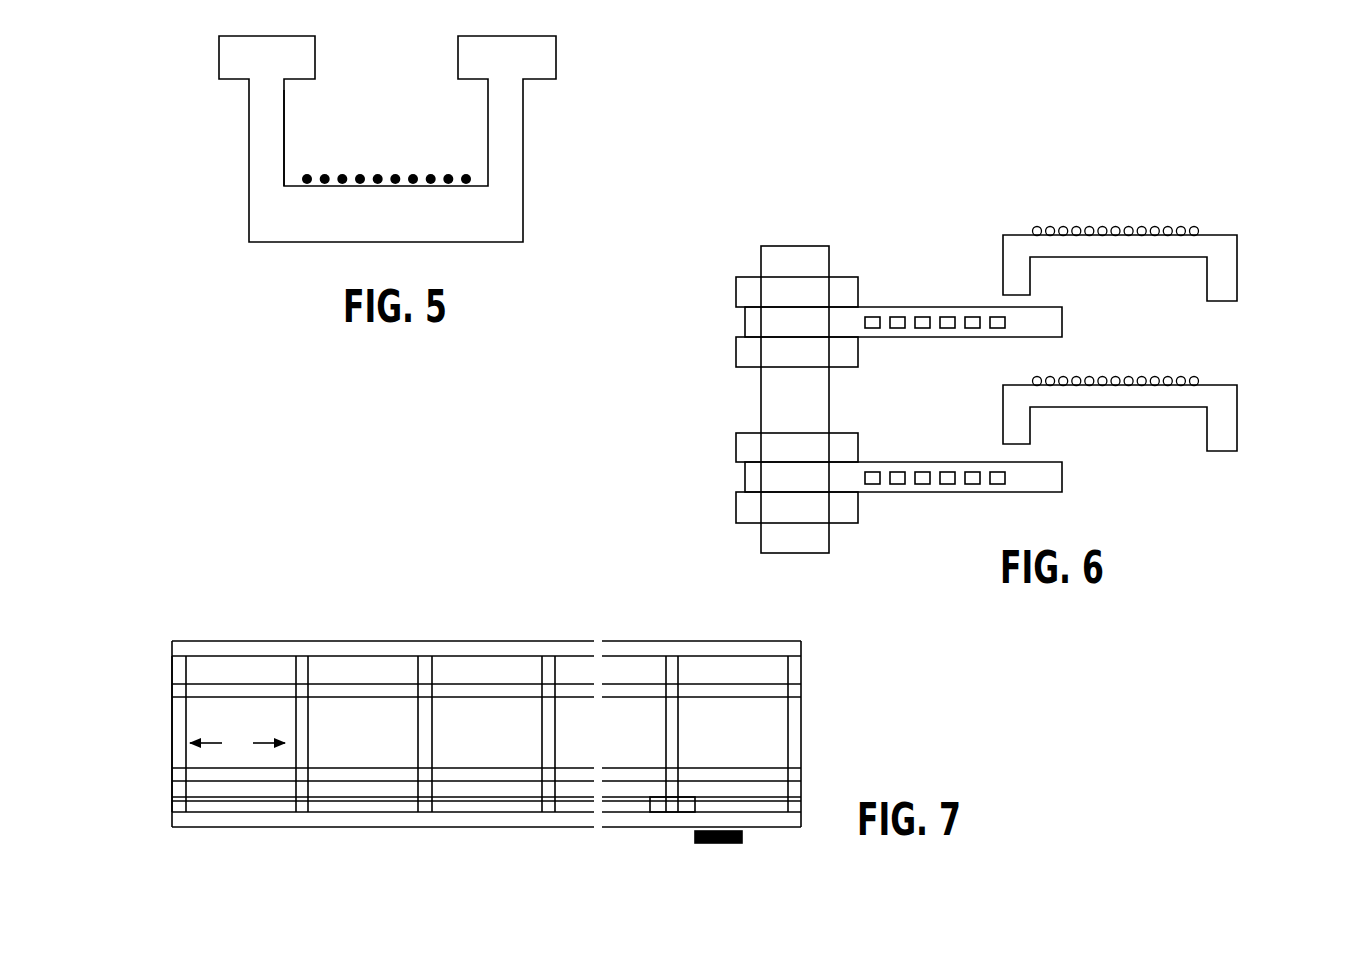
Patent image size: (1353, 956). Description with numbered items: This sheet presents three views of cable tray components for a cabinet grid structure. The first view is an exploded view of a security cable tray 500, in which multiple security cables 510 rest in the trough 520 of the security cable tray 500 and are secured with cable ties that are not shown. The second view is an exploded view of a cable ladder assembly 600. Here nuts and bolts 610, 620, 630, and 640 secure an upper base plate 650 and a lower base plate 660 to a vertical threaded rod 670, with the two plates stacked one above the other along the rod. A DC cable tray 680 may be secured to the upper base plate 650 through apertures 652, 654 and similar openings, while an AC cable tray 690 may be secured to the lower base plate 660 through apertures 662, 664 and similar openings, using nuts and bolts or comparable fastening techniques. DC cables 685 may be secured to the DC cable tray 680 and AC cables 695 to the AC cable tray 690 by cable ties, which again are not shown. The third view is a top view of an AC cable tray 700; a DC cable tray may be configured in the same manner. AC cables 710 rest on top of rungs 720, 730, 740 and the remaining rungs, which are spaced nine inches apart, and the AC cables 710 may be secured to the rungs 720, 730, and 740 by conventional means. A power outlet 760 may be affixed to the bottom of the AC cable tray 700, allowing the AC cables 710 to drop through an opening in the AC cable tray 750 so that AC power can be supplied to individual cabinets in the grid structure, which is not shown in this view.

In FIG. 5, the security cable tray 500 is at (222, 155).
In FIG. 5, the security cables 510 is at (431, 163).
In FIG. 5, the trough 520 is at (285, 100).
In FIG. 6, the cable ladder assembly 600 is at (637, 412).
In FIG. 6, the nuts and bolts 610 is at (736, 290).
In FIG. 6, the nuts and bolts 620 is at (736, 348).
In FIG. 6, the nuts and bolts 630 is at (736, 442).
In FIG. 6, the nuts and bolts 640 is at (736, 500).
In FIG. 6, the upper base plate 650 is at (1062, 311).
In FIG. 6, the aperture 652 is at (872, 328).
In FIG. 6, the aperture 654 is at (898, 317).
In FIG. 6, the lower base plate 660 is at (1062, 483).
In FIG. 6, the aperture 662 is at (872, 484).
In FIG. 6, the aperture 664 is at (898, 472).
In FIG. 6, the threaded rod 670 is at (829, 407).
In FIG. 6, the DC cable tray 680 is at (1237, 265).
In FIG. 6, the DC cables 685 is at (1167, 206).
In FIG. 6, the AC cable tray 690 is at (1237, 413).
In FIG. 6, the AC cables 695 is at (1167, 362).
In FIG. 7, the AC cable tray 700 is at (161, 743).
In FIG. 7, the AC cables 710 is at (810, 692).
In FIG. 7, the rung 720 is at (172, 829).
In FIG. 7, the rung 730 is at (302, 829).
In FIG. 7, the rung 740 is at (425, 829).
In FIG. 7, the opening in the AC cable tray 750 is at (655, 801).
In FIG. 7, the power outlet 760 is at (742, 838).